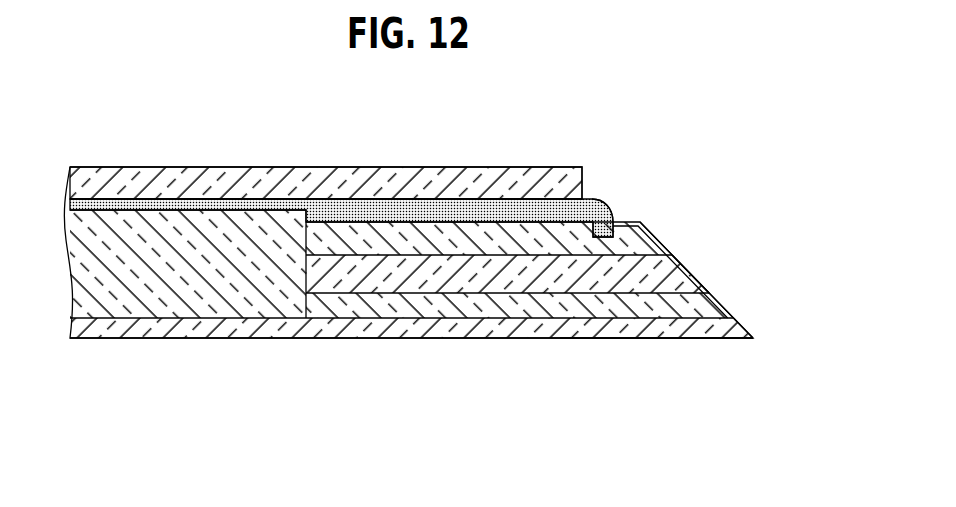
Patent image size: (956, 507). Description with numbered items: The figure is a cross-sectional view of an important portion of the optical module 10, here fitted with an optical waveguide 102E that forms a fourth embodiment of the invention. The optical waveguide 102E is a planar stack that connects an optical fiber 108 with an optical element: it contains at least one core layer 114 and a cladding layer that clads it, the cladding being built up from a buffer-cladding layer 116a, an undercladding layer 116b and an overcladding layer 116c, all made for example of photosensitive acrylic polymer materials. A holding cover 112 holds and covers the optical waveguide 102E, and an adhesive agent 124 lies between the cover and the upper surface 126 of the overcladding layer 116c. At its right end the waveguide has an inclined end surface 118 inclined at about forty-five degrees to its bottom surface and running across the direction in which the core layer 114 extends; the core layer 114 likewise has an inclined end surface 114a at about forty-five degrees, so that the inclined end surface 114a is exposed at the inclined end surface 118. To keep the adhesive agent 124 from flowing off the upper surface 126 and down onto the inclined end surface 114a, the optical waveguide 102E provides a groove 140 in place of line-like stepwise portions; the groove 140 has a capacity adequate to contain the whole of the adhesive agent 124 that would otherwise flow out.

The optical module 10 is at (207, 487).
The holding cover 112 is at (313, 180).
The adhesive agent 124 is at (472, 212).
The groove 140 is at (613, 227).
The optical fiber 108 is at (242, 300).
The upper surface of the overcladding layer 126 is at (445, 223).
The core layer 114 is at (500, 278).
The inclined end surface of the core layer 114a is at (700, 284).
The inclined end surface 118 is at (688, 272).
The overcladding layer 116c is at (548, 242).
The undercladding layer 116b is at (352, 298).
The buffer-cladding layer 116a is at (728, 328).
The optical waveguide 102E is at (662, 350).